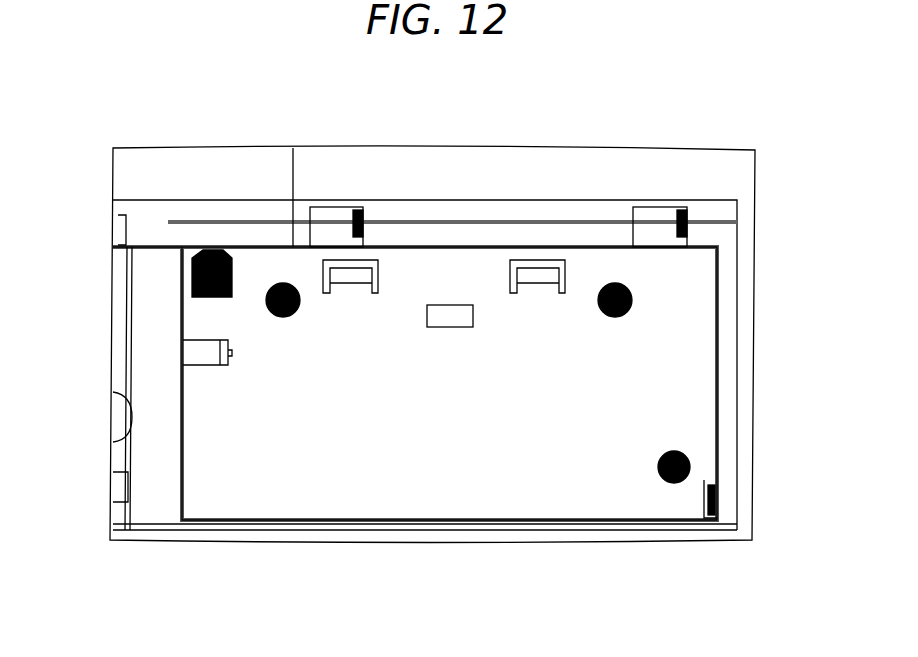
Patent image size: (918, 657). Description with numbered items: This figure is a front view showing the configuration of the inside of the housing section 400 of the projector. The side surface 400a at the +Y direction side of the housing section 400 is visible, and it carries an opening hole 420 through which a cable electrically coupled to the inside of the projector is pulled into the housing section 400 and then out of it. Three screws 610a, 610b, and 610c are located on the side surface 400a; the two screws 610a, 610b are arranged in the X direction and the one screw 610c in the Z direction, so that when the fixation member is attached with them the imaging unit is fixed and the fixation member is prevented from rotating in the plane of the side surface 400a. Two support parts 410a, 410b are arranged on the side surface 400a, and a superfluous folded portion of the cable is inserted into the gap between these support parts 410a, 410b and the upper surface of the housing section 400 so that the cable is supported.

The housing section 400 is at (771, 72).
The side surface 400a is at (440, 470).
The opening hole 420 is at (232, 278).
The support part 410a is at (533, 263).
The support part 410b is at (340, 263).
The screw 610a is at (619, 318).
The screw 610b is at (287, 318).
The screw 610c is at (672, 451).